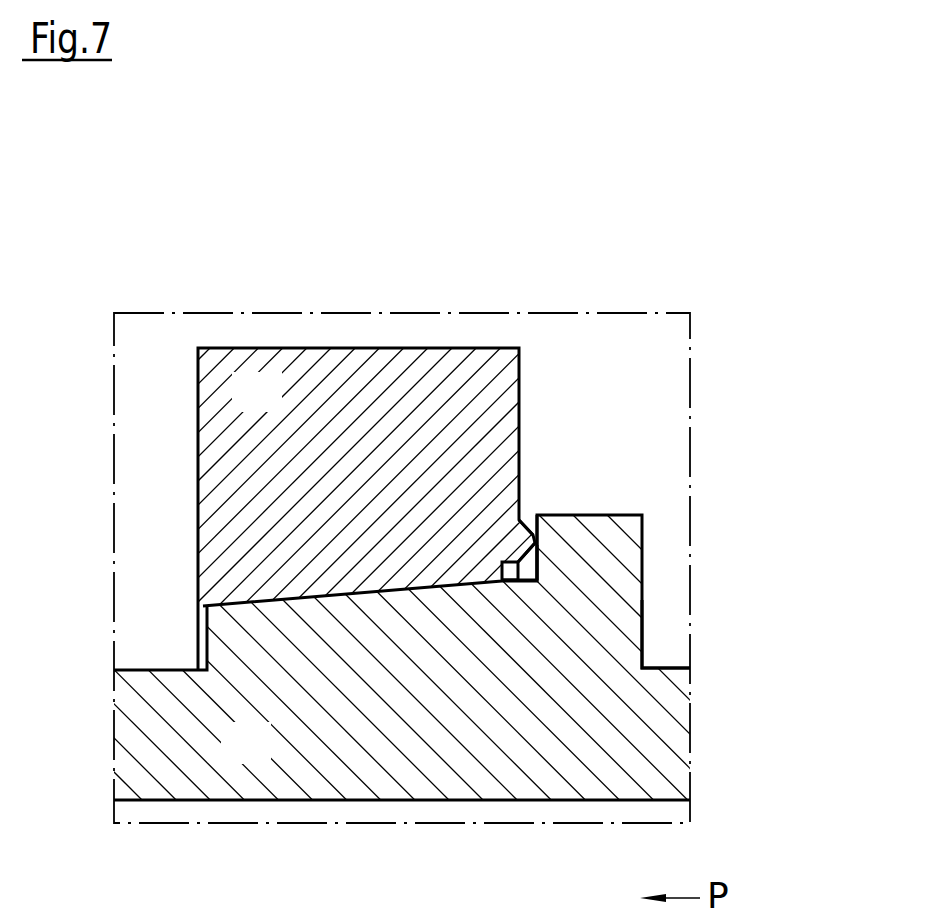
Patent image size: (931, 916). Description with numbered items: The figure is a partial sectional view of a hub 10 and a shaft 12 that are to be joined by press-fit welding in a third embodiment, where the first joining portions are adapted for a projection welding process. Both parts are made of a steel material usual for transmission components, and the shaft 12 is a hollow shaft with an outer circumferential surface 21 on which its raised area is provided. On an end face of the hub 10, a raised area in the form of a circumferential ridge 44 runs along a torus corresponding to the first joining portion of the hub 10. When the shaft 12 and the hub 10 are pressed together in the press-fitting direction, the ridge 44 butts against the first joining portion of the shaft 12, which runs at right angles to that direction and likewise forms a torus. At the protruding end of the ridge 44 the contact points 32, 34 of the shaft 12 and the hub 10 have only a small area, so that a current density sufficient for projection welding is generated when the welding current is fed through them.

The hub 10 is at (276, 407).
The shaft 12 is at (263, 758).
The contact point 32 is at (503, 544).
The circumferential ridge 44 is at (540, 514).
The contact point 34 is at (550, 538).
The outer circumferential surface 21 is at (660, 668).